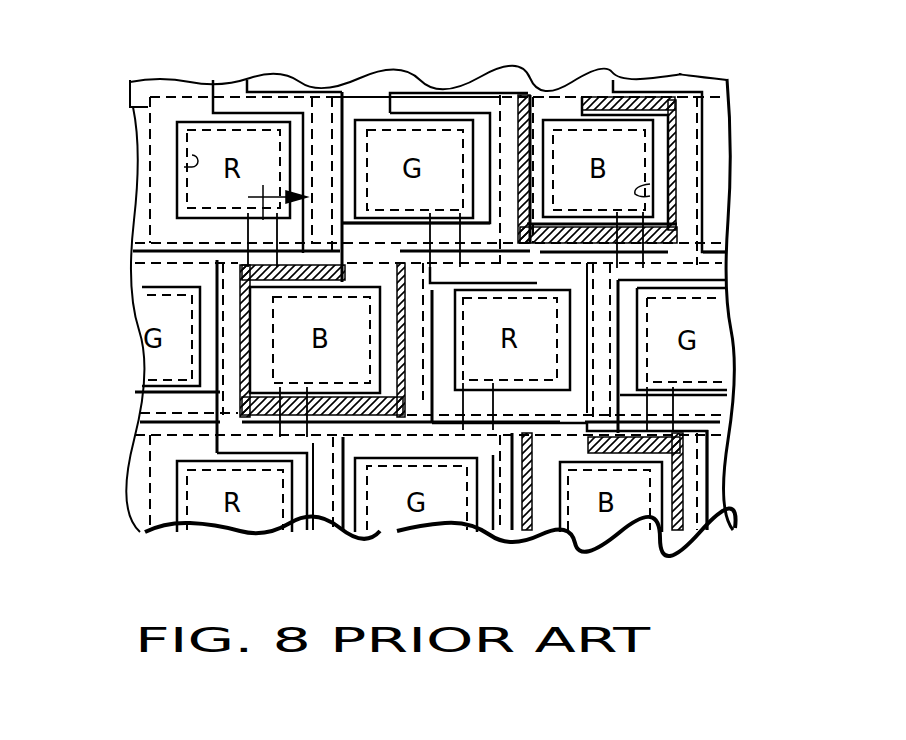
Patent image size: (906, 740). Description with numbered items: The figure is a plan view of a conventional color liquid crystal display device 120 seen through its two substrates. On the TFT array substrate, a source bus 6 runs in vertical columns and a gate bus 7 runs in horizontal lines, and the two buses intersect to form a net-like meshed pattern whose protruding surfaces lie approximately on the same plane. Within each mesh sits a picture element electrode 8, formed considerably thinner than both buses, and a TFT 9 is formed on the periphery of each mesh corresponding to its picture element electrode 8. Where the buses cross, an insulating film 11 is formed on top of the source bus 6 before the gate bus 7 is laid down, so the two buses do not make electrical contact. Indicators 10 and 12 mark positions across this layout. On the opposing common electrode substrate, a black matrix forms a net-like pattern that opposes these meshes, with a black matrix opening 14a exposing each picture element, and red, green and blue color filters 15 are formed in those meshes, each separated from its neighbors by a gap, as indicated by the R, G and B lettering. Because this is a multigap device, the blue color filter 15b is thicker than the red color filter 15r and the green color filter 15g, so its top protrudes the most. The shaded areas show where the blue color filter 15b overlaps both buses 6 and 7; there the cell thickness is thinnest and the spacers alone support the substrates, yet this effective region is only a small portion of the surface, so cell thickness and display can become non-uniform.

The source bus 6 is at (293, 90).
The gate bus 7 is at (793, 458).
The picture element electrode 8 is at (173, 203).
The TFT 9 is at (250, 237).
The section line 10 is at (487, 157).
The insulating film 11 is at (310, 302).
The section line 12 is at (415, 397).
The black matrix opening 14a is at (195, 160).
The color filters 15 is at (175, 97).
The red color filter 15r is at (135, 128).
The green color filter 15g is at (370, 93).
The blue color filter 15b is at (557, 97).
The liquid crystal display device 120 is at (660, 555).